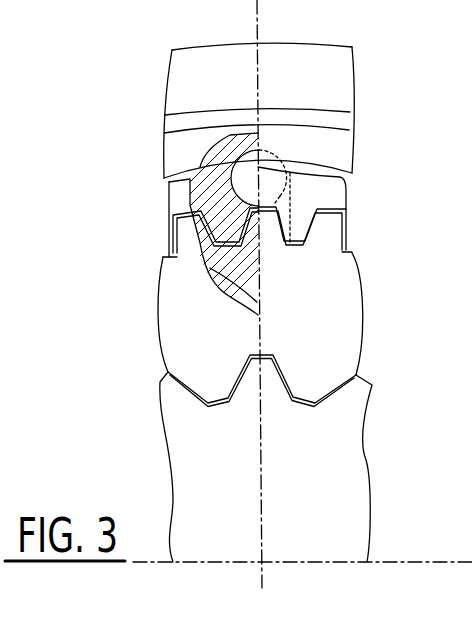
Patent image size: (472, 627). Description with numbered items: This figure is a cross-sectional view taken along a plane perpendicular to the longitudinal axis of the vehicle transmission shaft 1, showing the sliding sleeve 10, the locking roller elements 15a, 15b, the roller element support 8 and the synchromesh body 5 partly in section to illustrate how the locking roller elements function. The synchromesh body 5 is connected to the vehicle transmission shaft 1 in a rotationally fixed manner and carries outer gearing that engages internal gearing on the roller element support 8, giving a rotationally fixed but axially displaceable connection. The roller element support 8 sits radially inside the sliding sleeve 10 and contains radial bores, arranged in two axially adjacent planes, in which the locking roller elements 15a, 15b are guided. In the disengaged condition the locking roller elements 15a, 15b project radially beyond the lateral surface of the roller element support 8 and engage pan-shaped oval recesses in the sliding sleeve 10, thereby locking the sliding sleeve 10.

The sliding sleeve 10 is at (349, 108).
The roller element support 8 is at (347, 195).
The locking roller element 15a is at (189, 200).
The locking roller element 15b is at (177, 215).
The synchromesh body 5 is at (363, 313).
The vehicle transmission shaft 1 is at (358, 443).